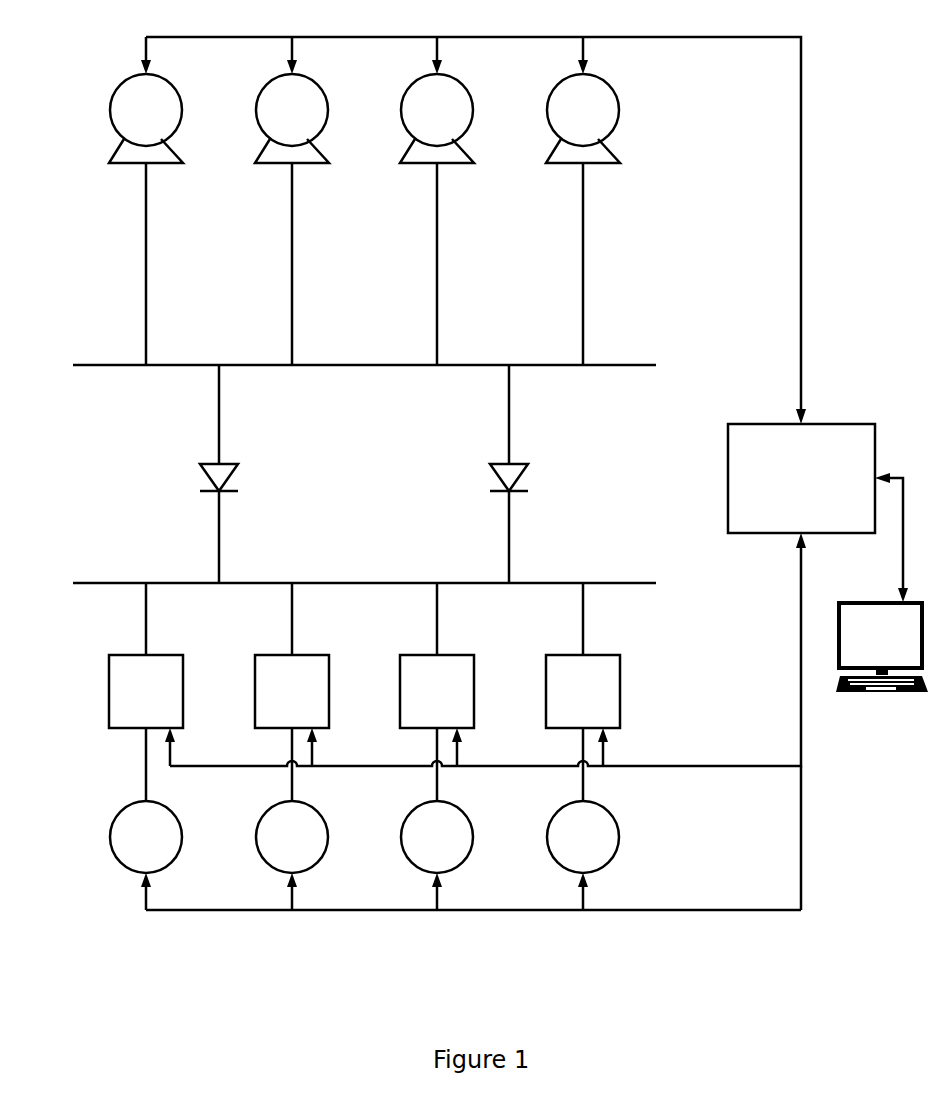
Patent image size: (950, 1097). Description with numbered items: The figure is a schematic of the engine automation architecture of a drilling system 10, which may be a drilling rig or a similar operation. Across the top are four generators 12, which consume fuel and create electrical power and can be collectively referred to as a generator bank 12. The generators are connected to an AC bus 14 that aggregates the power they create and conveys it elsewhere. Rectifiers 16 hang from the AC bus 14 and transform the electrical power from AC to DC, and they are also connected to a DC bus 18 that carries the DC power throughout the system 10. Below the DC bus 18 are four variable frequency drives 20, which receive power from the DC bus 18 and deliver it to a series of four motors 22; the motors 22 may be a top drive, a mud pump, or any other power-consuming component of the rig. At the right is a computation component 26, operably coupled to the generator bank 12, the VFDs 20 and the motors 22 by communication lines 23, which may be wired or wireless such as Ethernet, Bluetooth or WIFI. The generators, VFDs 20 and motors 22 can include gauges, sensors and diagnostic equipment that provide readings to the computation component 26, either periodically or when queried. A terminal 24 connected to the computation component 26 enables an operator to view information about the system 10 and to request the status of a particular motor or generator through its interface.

The drilling system 10 is at (860, 106).
The generators 12 is at (62, 109).
The AC bus 14 is at (593, 366).
The rectifiers 16 is at (590, 476).
The DC bus 18 is at (635, 588).
The variable frequency drives 20 is at (60, 700).
The motors 22 is at (62, 848).
The communication lines 23 is at (801, 190).
The terminal 24 is at (866, 692).
The computation component 26 is at (836, 424).